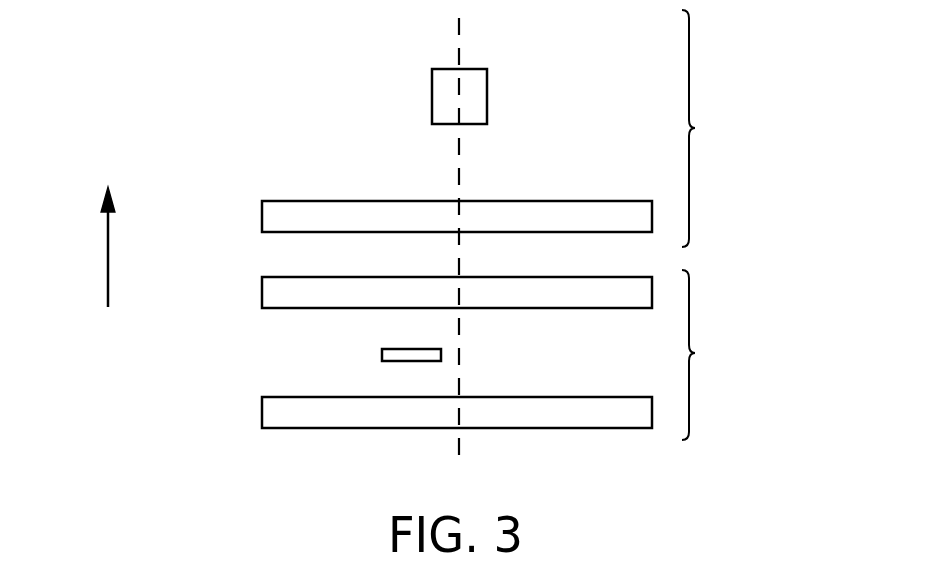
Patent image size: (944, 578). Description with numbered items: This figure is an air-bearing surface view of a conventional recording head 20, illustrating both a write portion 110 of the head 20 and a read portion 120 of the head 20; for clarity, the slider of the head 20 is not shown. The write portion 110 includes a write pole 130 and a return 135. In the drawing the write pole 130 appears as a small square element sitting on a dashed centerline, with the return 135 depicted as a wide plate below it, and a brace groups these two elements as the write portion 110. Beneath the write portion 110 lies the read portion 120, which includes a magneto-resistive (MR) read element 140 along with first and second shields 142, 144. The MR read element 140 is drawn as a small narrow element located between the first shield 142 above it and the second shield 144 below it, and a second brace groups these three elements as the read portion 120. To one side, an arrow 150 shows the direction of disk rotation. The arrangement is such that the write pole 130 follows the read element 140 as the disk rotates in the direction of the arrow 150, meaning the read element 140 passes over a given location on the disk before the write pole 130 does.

The head 20 is at (712, 68).
The write portion 110 is at (719, 128).
The read portion 120 is at (717, 355).
The write pole 130 is at (487, 96).
The return 135 is at (321, 200).
The magneto-resistive read element 140 is at (381, 354).
The first shield 142 is at (293, 309).
The second shield 144 is at (293, 429).
The arrow 150 is at (108, 245).